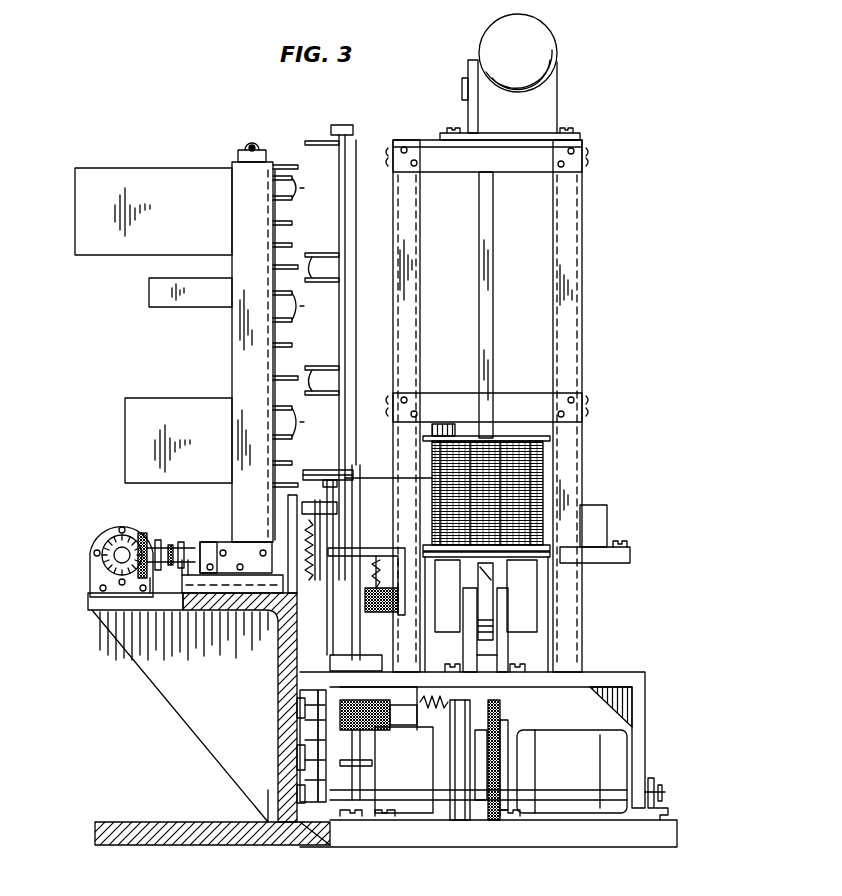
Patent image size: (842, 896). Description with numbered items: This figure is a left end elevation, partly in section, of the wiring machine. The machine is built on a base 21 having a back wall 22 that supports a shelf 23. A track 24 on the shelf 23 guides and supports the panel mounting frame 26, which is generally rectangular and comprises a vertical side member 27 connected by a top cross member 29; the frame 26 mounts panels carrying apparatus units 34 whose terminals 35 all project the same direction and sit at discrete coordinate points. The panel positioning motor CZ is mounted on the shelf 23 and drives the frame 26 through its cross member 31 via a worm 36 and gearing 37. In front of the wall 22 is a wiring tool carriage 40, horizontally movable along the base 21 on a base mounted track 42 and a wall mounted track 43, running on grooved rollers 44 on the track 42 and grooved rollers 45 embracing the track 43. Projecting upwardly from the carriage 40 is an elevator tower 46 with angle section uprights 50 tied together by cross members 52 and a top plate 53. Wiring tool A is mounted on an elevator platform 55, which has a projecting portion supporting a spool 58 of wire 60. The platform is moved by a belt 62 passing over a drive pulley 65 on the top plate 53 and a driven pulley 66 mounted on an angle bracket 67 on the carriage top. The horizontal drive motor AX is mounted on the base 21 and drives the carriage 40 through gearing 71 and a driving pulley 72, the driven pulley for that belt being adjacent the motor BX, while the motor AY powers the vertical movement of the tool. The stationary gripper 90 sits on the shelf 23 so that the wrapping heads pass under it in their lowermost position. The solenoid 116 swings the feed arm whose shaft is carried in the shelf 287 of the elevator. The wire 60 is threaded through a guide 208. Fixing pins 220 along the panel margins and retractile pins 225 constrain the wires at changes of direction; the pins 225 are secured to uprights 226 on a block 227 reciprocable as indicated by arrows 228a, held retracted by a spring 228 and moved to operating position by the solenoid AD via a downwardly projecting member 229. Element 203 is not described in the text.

The base 21 is at (104, 840).
The back wall 22 is at (284, 696).
The shelf 23 is at (92, 600).
The track 24 is at (244, 612).
The panel mounting frame 26 is at (176, 377).
The vertical side member 27 is at (232, 329).
The top cross member 29 is at (240, 153).
The cross member 31 is at (212, 542).
The apparatus unit 34 is at (130, 180).
The terminal 35 is at (300, 320).
The worm 36 is at (174, 545).
The gearing 37 is at (110, 540).
The wiring tool carriage 40 is at (640, 717).
The base mounted track 42 is at (662, 814).
The wall mounted track 43 is at (300, 760).
The grooved roller 44 is at (658, 790).
The grooved roller 45 is at (300, 708).
The elevator tower 46 is at (521, 256).
The angle section upright 50 is at (405, 226).
The cross member 52 is at (528, 160).
The top plate 53 is at (578, 135).
The elevator platform 55 is at (630, 556).
The spool 58 is at (543, 438).
The wire 60 is at (352, 478).
The belt 62 is at (480, 328).
The drive pulley 65 is at (468, 70).
The driven pulley 66 is at (488, 583).
The angle bracket 67 is at (470, 656).
The gearing 71 is at (502, 822).
The driving pulley 72 is at (470, 822).
The stationary gripper 90 is at (280, 530).
The solenoid 116 is at (388, 612).
The plate 203 is at (345, 476).
The guide 208 is at (362, 470).
The fixing pin 220 is at (286, 162).
The retractile pin 225 is at (316, 146).
The upright 226 is at (345, 152).
The block 227 is at (335, 668).
The spring 228 is at (428, 698).
The arrows 228a is at (327, 636).
The member 229 is at (398, 728).
The shelf 287 is at (354, 581).
The horizontal drive motor AX is at (569, 740).
The vertical drive motor AY is at (518, 53).
The solenoid AD is at (368, 745).
The horizontal drive motor BX is at (405, 792).
The panel positioning motor CZ is at (92, 553).